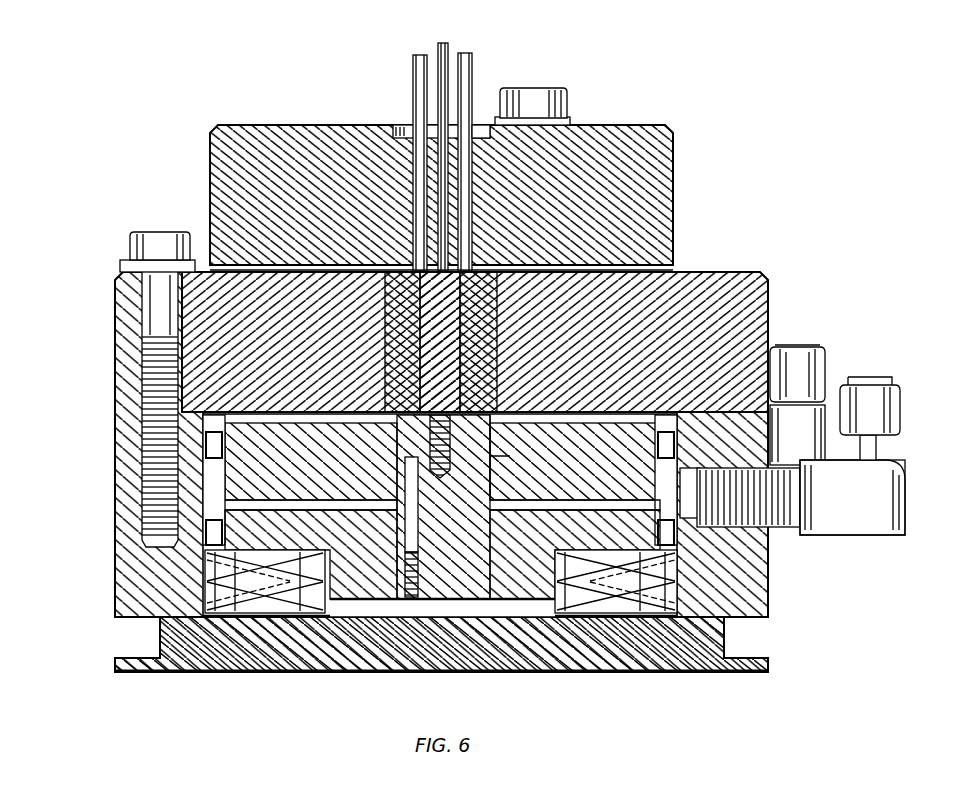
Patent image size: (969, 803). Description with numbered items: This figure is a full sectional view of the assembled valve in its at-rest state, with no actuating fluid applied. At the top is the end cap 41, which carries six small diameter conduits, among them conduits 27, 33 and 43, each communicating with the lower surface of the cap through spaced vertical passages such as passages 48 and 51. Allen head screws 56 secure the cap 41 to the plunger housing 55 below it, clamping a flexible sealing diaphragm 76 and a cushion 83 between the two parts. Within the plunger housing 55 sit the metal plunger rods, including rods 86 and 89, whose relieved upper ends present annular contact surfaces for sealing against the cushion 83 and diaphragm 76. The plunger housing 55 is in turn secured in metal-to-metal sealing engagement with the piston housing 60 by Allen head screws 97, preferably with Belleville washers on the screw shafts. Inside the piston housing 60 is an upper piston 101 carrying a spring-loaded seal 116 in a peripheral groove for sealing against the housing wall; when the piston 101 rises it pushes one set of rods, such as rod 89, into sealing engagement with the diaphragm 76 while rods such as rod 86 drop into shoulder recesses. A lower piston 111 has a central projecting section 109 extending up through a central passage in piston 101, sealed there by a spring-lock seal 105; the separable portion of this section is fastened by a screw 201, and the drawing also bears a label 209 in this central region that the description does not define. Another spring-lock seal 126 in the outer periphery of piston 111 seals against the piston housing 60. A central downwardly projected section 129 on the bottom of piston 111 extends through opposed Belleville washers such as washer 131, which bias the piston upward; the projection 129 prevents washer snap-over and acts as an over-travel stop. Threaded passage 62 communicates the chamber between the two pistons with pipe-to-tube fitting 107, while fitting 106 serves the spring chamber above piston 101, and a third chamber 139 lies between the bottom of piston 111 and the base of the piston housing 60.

The small diameter conduit 27 is at (472, 55).
The small diameter conduit 33 is at (413, 60).
The end cap 41 is at (673, 178).
The small diameter conduit 43 is at (446, 45).
The vertical passage 48 is at (478, 125).
The vertical passage 51 is at (408, 125).
The plunger housing 55 is at (768, 298).
The Allen head screw 56 is at (567, 95).
The piston housing 60 is at (115, 487).
The threaded passage 62 is at (683, 527).
The flexible sealing diaphragm 76 is at (570, 270).
The cushion 83 is at (345, 272).
The plunger rod 86 is at (400, 328).
The plunger rod 89 is at (497, 320).
The Allen head screw 97 is at (150, 232).
The piston 101 is at (302, 473).
The spring-lock seal 105 is at (493, 445).
The pipe-to-tube fitting 106 is at (825, 350).
The pipe-to-tube fitting 107 is at (898, 385).
The central projecting section 109 is at (497, 462).
The piston 111 is at (579, 543).
The spring-loaded seal 116 is at (680, 447).
The spring-lock seal 126 is at (210, 545).
The central downwardly projected section 129 is at (350, 615).
The Belleville washer 131 is at (250, 613).
The chamber 139 is at (528, 617).
The screw 201 is at (410, 600).
The central column 209 is at (446, 600).